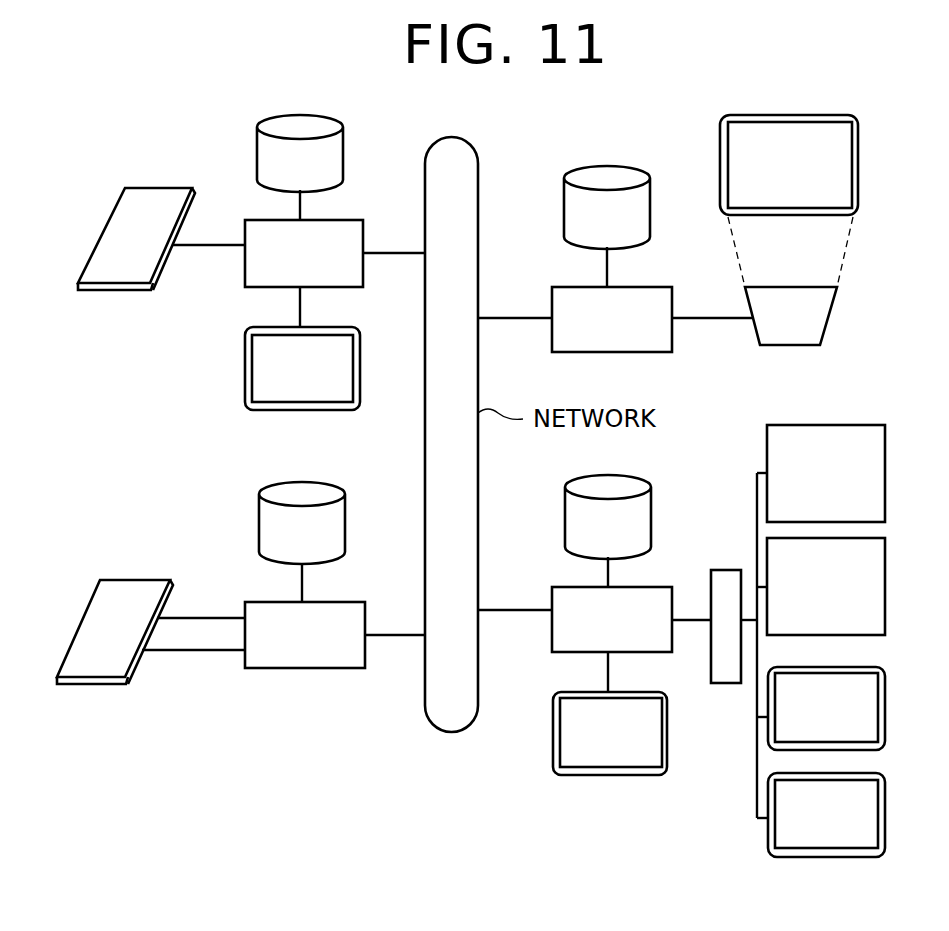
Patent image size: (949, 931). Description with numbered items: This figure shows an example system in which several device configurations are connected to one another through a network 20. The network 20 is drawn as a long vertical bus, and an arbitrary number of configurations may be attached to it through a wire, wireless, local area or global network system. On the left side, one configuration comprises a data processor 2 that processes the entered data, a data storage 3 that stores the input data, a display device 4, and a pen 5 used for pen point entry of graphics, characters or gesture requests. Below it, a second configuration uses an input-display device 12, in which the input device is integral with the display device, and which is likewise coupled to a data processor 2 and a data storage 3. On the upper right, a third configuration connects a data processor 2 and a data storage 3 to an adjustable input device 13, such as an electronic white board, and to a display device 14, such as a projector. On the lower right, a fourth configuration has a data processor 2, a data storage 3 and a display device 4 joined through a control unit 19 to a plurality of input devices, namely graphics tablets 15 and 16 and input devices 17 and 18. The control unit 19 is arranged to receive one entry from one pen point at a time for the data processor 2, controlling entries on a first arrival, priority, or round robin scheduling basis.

The data processor 2 is at (363, 225).
The data storage 3 is at (343, 147).
The display device 4 is at (360, 340).
The pen 5 is at (160, 187).
The input-display device 12 is at (136, 580).
The input device 13 is at (860, 152).
The display device 14 is at (833, 313).
The graphics tablet 15 is at (887, 470).
The graphics tablet 16 is at (887, 583).
The input device 17 is at (887, 708).
The input device 18 is at (887, 820).
The control unit 19 is at (723, 570).
The network 20 is at (480, 187).